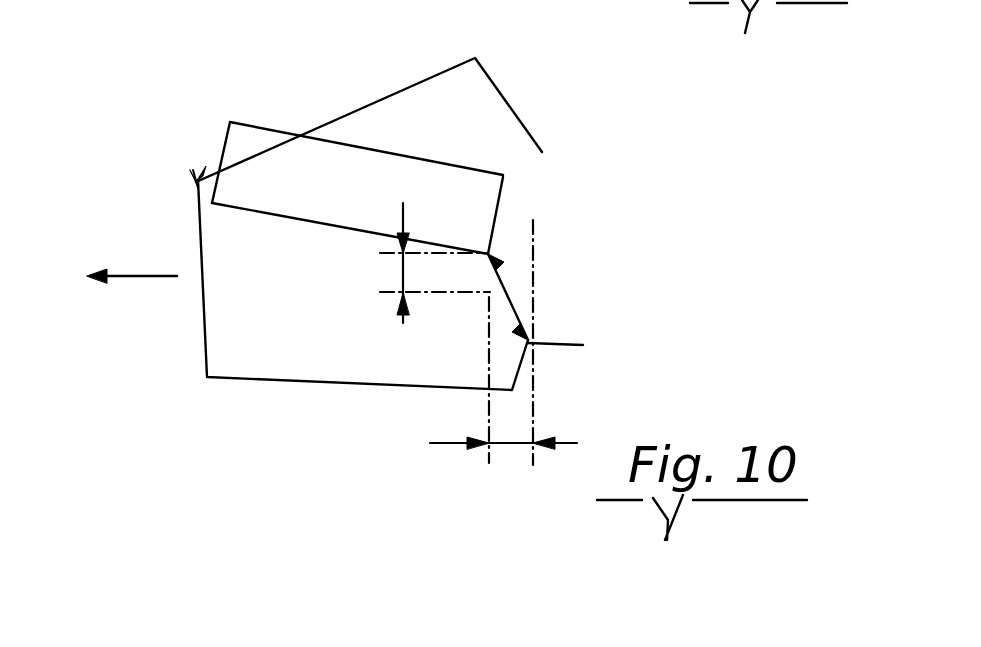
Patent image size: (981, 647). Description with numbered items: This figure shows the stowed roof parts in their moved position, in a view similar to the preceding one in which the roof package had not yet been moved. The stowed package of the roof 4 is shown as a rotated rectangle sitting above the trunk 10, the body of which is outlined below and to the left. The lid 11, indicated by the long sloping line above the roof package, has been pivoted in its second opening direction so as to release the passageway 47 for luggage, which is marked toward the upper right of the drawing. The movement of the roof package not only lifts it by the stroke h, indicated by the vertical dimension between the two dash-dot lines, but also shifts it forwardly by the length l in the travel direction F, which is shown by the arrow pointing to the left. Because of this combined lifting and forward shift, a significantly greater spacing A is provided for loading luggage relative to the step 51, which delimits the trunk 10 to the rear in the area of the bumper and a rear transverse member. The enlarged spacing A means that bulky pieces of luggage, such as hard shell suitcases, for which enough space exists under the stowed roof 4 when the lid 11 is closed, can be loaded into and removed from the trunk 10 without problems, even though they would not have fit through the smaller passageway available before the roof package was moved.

The roof 4 is at (385, 181).
The trunk 10 is at (467, 352).
The lid 11 is at (365, 108).
The passageway 47 is at (590, 199).
The step 51 is at (536, 334).
The spacing A is at (512, 290).
The stroke h is at (403, 267).
The length l is at (505, 445).
The travel direction F is at (123, 277).